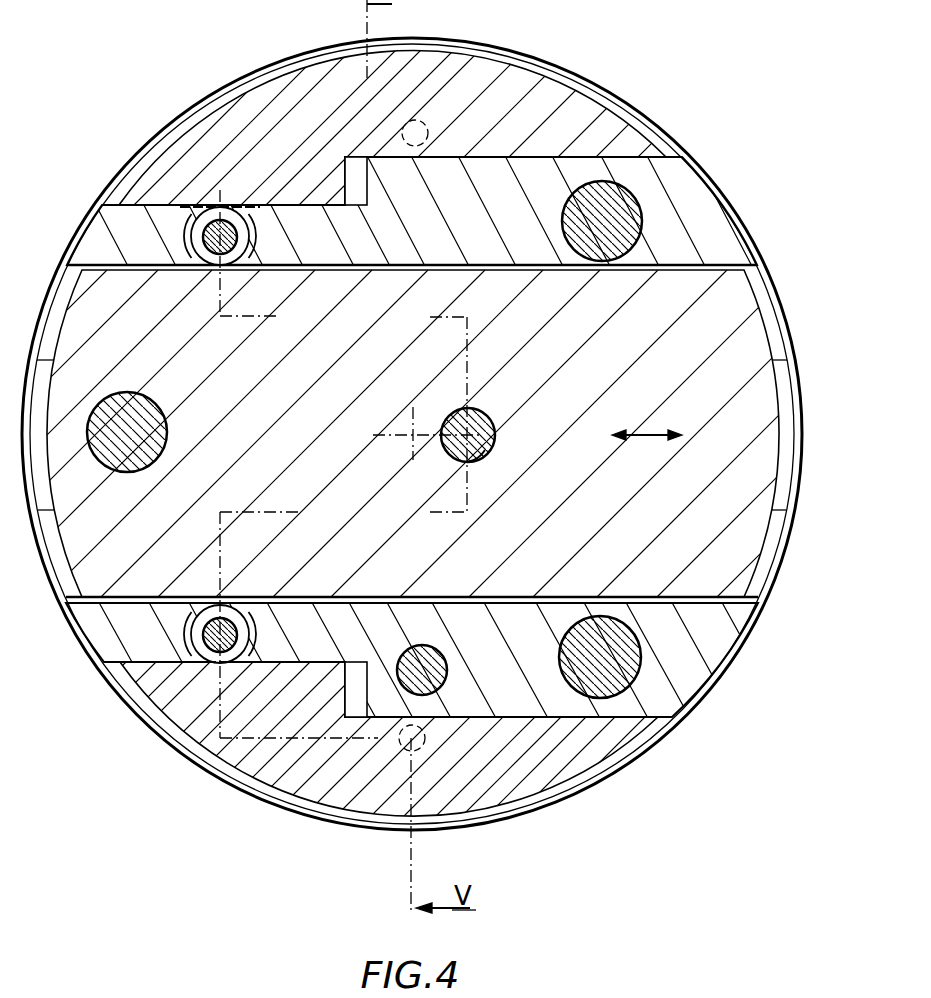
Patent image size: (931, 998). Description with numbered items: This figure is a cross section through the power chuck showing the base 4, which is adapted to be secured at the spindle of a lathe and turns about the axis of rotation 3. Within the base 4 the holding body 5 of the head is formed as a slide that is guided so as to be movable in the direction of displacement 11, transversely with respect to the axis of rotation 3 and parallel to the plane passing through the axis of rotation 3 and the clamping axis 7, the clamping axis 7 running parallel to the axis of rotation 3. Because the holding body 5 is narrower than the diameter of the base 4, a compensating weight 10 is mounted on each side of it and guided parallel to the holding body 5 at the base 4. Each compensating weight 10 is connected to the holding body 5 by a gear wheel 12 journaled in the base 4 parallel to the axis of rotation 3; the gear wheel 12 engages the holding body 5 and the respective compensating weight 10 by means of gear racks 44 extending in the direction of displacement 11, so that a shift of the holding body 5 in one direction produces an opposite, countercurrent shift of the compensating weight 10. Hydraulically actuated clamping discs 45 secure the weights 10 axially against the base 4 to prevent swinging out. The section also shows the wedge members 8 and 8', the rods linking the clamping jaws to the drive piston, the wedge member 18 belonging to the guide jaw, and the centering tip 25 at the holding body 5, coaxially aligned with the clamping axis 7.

The axis of rotation 3 is at (413, 435).
The base 4 is at (722, 222).
The holding body 5 is at (626, 342).
The clamping axis 7 is at (478, 425).
The wedge member 8 is at (674, 377).
The wedge member 8' is at (152, 432).
The compensating weight 10 is at (262, 118).
The direction of displacement 11 is at (645, 437).
The gear wheel 12 is at (245, 234).
The wedge member 18 is at (449, 672).
The centering tip 25 is at (483, 452).
The gear rack 44 is at (205, 205).
The clamping disc 45 is at (422, 122).